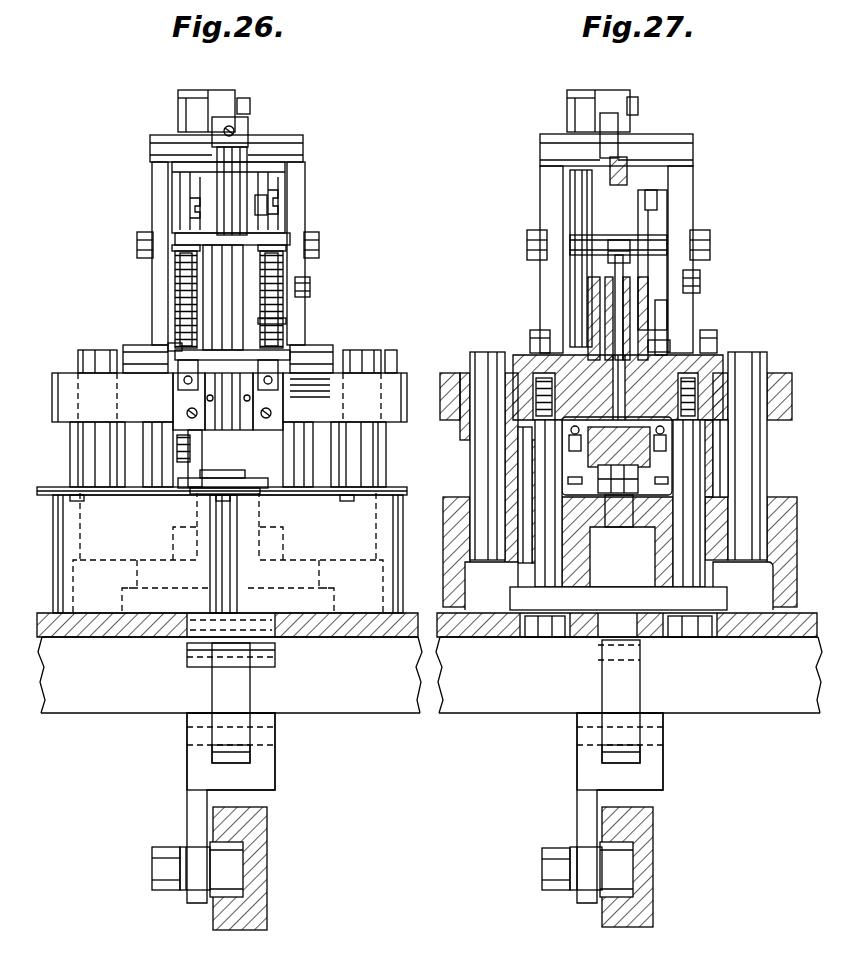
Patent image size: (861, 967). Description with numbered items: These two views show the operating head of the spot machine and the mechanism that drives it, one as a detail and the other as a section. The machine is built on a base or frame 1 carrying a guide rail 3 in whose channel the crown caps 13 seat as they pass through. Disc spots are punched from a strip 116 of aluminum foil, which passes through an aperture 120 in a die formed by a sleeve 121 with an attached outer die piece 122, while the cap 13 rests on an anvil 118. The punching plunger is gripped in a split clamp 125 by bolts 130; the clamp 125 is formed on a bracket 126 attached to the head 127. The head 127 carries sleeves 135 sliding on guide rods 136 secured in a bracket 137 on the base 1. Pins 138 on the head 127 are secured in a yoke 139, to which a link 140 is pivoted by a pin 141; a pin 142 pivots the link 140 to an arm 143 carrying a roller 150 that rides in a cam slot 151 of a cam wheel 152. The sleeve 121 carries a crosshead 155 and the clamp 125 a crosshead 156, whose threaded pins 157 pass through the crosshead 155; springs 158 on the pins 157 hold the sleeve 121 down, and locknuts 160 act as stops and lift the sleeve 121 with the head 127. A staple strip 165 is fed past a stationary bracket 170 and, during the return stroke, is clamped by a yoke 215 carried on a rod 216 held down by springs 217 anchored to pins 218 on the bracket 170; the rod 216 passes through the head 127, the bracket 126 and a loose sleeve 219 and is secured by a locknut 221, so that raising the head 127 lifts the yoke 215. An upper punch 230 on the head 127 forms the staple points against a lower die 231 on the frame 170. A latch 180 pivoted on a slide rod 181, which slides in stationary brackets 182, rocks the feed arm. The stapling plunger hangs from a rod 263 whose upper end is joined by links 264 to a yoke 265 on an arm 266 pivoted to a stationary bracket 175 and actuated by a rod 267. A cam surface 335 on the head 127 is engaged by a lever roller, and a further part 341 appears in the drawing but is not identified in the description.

In FIG. 26, the base or frame 1 is at (92, 682).
In FIG. 27, the base or frame 1 is at (780, 688).
In FIG. 26, the guide rail 3 is at (52, 475).
In FIG. 26, the crown caps 13 is at (78, 498).
In FIG. 26, the strip 116 is at (235, 497).
In FIG. 27, the strip 116 is at (625, 480).
In FIG. 26, the anvil 118 is at (237, 578).
In FIG. 26, the aperture 120 is at (248, 492).
In FIG. 26, the sleeve 121 is at (232, 418).
In FIG. 26, the outer die piece 122 is at (240, 498).
In FIG. 26, the split clamp 125 is at (222, 264).
In FIG. 26, the bracket 126 is at (398, 348).
In FIG. 27, the bracket 126 is at (588, 324).
In FIG. 26, the head 127 is at (410, 358).
In FIG. 27, the head 127 is at (805, 345).
In FIG. 26, the bolts 130 is at (284, 246).
In FIG. 26, the sleeve 135 is at (82, 438).
In FIG. 27, the sleeve 135 is at (770, 432).
In FIG. 26, the guide rods 136 is at (86, 350).
In FIG. 27, the guide rods 136 is at (487, 355).
In FIG. 26, the bracket 137 is at (230, 675).
In FIG. 27, the bracket 137 is at (629, 675).
In FIG. 26, the pins 138 is at (303, 464).
In FIG. 27, the pins 138 is at (693, 458).
In FIG. 26, the yoke 139 is at (366, 645).
In FIG. 27, the yoke 139 is at (650, 582).
In FIG. 26, the link 140 is at (235, 695).
In FIG. 27, the link 140 is at (610, 679).
In FIG. 26, the pin 141 is at (262, 650).
In FIG. 27, the pin 141 is at (587, 633).
In FIG. 26, the pin 142 is at (265, 749).
In FIG. 27, the pin 142 is at (660, 734).
In FIG. 26, the arm 143 is at (260, 784).
In FIG. 27, the arm 143 is at (598, 778).
In FIG. 26, the roller 150 is at (228, 860).
In FIG. 27, the roller 150 is at (622, 859).
In FIG. 26, the cam slot 151 is at (272, 893).
In FIG. 27, the cam slot 151 is at (620, 898).
In FIG. 26, the cam wheel 152 is at (258, 918).
In FIG. 27, the cam wheel 152 is at (640, 908).
In FIG. 26, the crosshead 155 is at (177, 351).
In FIG. 26, the crosshead 156 is at (270, 236).
In FIG. 26, the threaded pins 157 is at (282, 272).
In FIG. 26, the springs 158 is at (282, 305).
In FIG. 26, the locknuts 160 is at (180, 374).
In FIG. 27, the staple strip 165 is at (618, 470).
In FIG. 27, the stationary bracket 170 is at (662, 470).
In FIG. 26, the stationary bracket 175 is at (150, 181).
In FIG. 27, the stationary bracket 175 is at (675, 179).
In FIG. 27, the latch 180 is at (665, 338).
In FIG. 27, the slide rod 181 is at (660, 199).
In FIG. 27, the stationary brackets 182 is at (661, 221).
In FIG. 27, the yoke 215 is at (670, 342).
In FIG. 27, the rod 216 is at (612, 299).
In FIG. 26, the springs 217 is at (180, 470).
In FIG. 27, the springs 217 is at (500, 410).
In FIG. 26, the pins 218 is at (175, 497).
In FIG. 27, the loose sleeve 219 is at (600, 285).
In FIG. 27, the locknut 221 is at (623, 246).
In FIG. 26, the upper punch 230 is at (175, 398).
In FIG. 27, the lower die 231 is at (548, 440).
In FIG. 26, the rod 263 is at (240, 100).
In FIG. 26, the links 264 is at (236, 140).
In FIG. 26, the yoke 265 is at (262, 205).
In FIG. 27, the arm 266 is at (605, 134).
In FIG. 26, the rod 267 is at (195, 188).
In FIG. 27, the rod 267 is at (590, 186).
In FIG. 26, the cam surface 335 is at (305, 384).
In FIG. 26, the adjusting nut 341 is at (310, 287).
In FIG. 27, the adjusting nut 341 is at (700, 277).